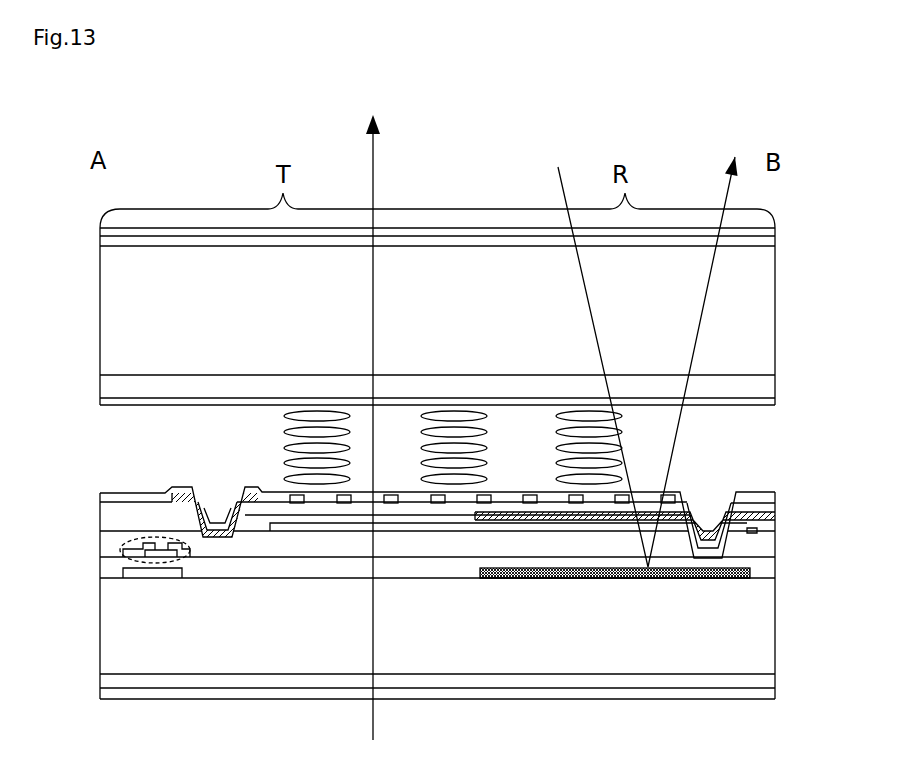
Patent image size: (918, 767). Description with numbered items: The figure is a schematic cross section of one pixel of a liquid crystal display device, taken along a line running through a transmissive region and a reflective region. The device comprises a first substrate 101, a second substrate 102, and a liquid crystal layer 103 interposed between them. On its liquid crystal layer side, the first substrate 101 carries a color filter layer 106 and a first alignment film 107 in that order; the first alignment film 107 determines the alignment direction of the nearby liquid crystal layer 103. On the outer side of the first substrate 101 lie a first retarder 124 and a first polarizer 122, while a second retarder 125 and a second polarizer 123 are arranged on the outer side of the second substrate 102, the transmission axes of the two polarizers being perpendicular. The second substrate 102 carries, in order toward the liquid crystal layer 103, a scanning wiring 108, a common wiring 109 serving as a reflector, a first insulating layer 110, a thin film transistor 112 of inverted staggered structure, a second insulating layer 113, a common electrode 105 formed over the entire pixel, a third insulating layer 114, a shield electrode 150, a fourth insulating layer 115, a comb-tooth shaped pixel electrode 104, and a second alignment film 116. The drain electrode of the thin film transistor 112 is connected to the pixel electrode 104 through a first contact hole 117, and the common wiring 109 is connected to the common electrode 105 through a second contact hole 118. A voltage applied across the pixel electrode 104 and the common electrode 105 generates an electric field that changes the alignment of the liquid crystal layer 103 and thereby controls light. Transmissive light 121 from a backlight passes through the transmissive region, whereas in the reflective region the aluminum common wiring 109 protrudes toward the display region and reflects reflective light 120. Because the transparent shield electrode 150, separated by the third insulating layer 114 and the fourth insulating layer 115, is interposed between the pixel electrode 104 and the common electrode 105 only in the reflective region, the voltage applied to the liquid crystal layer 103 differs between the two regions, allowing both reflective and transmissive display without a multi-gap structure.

The first substrate 101 is at (768, 309).
The second substrate 102 is at (775, 633).
The liquid crystal layer 103 is at (97, 405).
The pixel electrode 104 is at (218, 533).
The common electrode 105 is at (775, 531).
The color filter layer 106 is at (775, 388).
The first alignment film 107 is at (775, 405).
The scanning wiring 108 is at (137, 575).
The common wiring (reflector) 109 is at (700, 580).
The first insulating layer 110 is at (775, 580).
The thin film transistor 112 is at (172, 562).
The second insulating layer 113 is at (775, 557).
The third insulating layer 114 is at (757, 531).
The fourth insulating layer 115 is at (775, 503).
The second alignment film 116 is at (775, 492).
The first contact hole 117 is at (238, 482).
The second contact hole 118 is at (728, 483).
The reflective light 120 is at (728, 203).
The transmissive light 121 is at (374, 163).
The first polarizer 122 is at (775, 232).
The second polarizer 123 is at (775, 700).
The first retarder 124 is at (775, 246).
The second retarder 125 is at (775, 683).
The shield electrode 150 is at (775, 514).